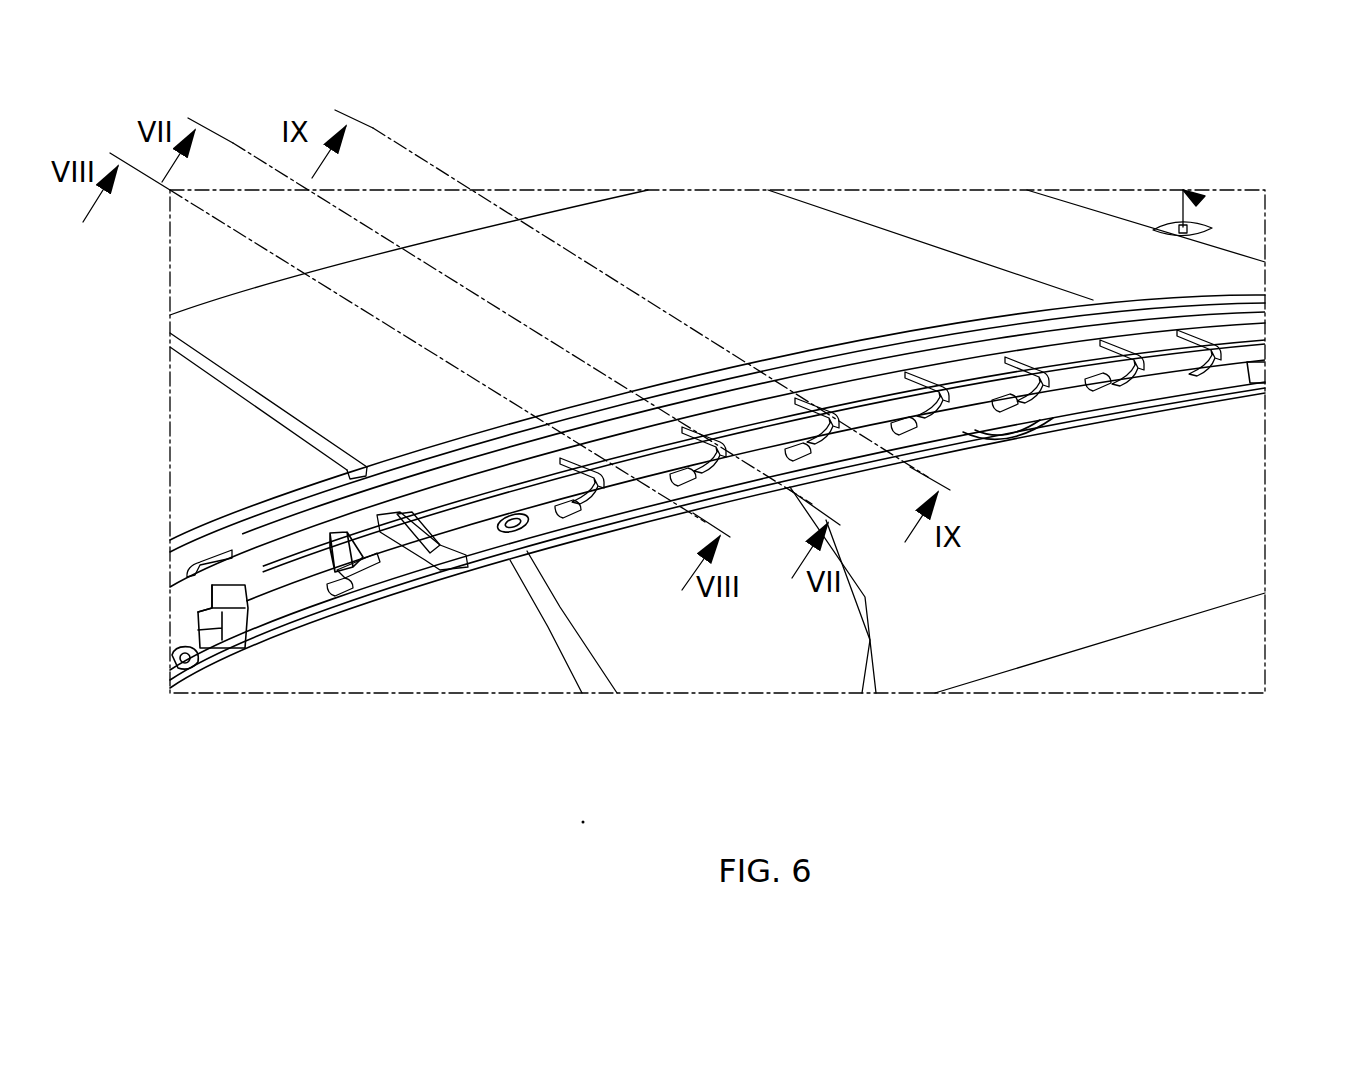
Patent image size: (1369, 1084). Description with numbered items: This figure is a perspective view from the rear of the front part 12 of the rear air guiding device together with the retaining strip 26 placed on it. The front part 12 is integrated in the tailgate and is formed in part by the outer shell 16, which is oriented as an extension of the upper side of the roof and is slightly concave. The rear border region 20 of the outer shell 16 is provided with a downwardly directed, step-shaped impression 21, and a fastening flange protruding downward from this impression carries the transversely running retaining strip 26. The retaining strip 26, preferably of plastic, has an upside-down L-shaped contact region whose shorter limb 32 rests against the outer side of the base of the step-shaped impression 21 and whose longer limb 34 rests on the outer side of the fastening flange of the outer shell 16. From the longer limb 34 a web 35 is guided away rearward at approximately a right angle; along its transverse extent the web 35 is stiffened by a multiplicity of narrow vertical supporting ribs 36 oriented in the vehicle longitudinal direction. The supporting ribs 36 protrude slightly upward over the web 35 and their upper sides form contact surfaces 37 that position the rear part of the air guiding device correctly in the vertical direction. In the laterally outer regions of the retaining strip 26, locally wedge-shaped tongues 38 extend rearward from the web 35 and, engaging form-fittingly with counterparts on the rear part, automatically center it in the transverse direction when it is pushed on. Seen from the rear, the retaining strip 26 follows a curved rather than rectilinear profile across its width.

The front part 12 is at (612, 186).
The outer shell 16 is at (517, 280).
The rear border region 20 is at (718, 440).
The step-shaped impression 21 is at (207, 560).
The retaining strip 26 is at (626, 492).
The shorter limb 32 is at (270, 535).
The longer limb 34 is at (877, 433).
The web 35 is at (755, 432).
The supporting ribs 36 is at (337, 588).
The contact surfaces 37 is at (700, 430).
The tongues 38 is at (445, 555).